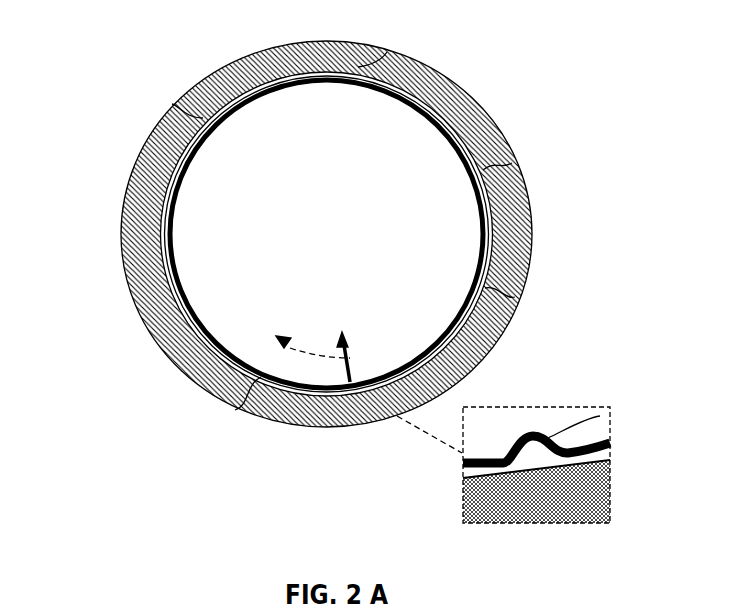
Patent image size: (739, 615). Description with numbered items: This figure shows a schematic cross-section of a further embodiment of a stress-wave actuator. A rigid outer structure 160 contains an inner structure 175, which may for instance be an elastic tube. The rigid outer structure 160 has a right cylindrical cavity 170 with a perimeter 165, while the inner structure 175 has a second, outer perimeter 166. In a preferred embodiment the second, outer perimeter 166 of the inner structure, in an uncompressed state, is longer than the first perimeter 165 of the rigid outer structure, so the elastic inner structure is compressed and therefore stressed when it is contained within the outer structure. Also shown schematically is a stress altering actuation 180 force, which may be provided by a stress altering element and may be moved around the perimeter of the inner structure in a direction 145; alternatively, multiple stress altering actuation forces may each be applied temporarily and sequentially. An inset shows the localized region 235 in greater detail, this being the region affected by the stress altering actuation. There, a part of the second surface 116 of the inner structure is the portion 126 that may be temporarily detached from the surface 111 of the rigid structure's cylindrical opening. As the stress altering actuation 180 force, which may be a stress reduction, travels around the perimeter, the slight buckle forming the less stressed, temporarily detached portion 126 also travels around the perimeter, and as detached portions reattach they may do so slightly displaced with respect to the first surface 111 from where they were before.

The rigid outer structure 160 is at (483, 108).
The right cylindrical cavity 170 is at (172, 104).
The inner structure 175 is at (353, 74).
The perimeter 165 is at (512, 163).
The second, outer perimeter 166 is at (515, 297).
The direction 145 is at (290, 350).
The stress altering actuation force 180 is at (340, 360).
The temporarily detached portion 126 is at (600, 416).
The second surface 116 is at (610, 456).
The surface 111 is at (490, 481).
The localized region 235 is at (557, 521).